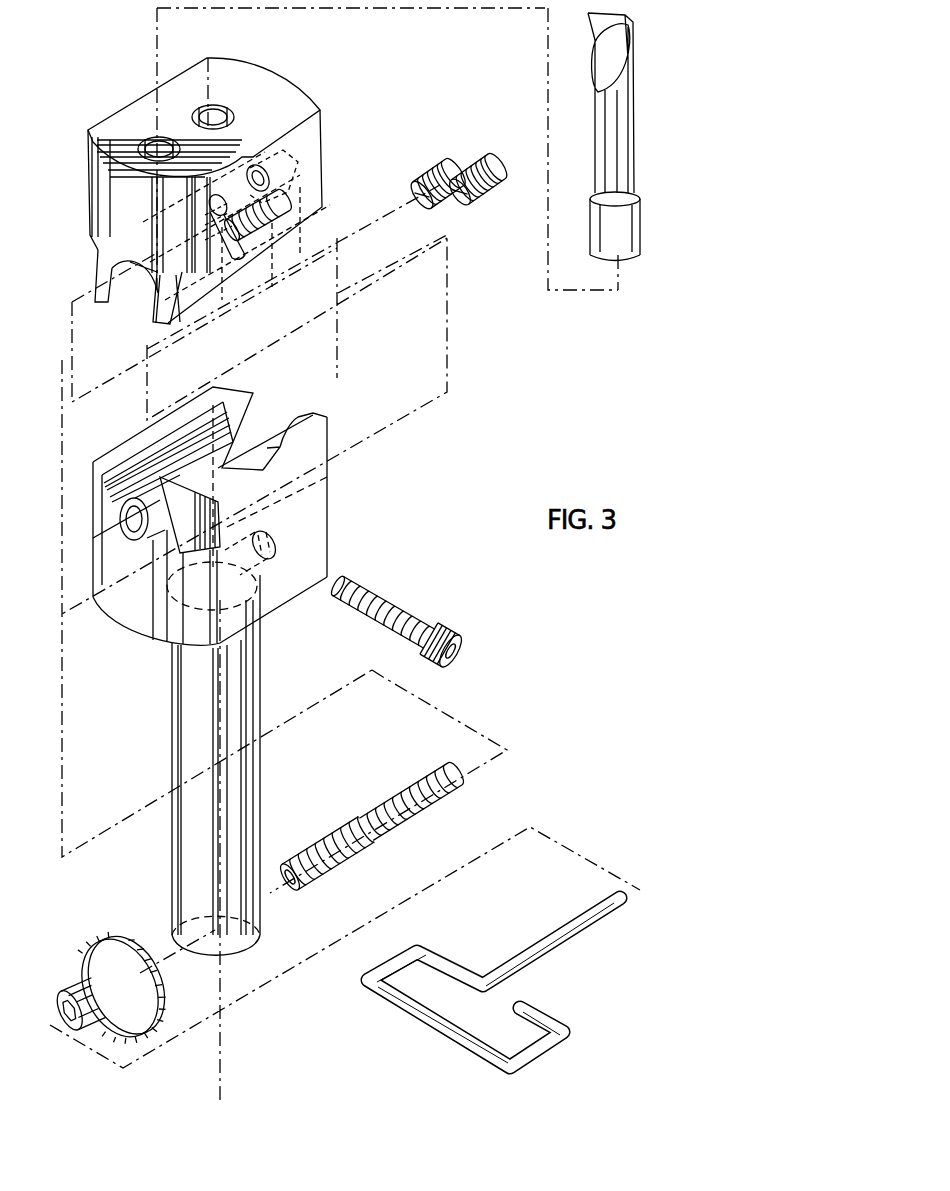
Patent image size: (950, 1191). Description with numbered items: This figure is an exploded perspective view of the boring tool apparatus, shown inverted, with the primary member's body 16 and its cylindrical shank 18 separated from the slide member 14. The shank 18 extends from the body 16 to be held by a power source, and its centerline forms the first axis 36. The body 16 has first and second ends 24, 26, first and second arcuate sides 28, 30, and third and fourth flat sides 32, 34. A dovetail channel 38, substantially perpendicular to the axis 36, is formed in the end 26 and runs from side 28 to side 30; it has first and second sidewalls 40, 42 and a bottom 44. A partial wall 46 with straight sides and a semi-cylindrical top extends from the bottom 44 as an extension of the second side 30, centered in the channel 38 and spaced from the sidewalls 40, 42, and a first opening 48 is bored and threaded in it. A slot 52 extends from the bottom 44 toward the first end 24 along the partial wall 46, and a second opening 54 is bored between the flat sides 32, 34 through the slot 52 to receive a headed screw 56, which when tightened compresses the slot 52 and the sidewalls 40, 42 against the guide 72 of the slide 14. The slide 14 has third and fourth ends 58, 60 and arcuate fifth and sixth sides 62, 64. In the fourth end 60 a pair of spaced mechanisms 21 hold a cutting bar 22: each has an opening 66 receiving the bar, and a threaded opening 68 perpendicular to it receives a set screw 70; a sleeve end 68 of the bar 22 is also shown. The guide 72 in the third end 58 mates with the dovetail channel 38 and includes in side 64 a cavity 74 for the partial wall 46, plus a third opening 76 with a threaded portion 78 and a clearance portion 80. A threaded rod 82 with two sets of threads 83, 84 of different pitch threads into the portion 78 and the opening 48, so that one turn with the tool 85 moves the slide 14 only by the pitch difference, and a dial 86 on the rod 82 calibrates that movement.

The slide member 14 is at (211, 197).
The body 16 is at (210, 507).
The shank 18 is at (251, 781).
The mechanism for holding a cutting bar 21 is at (134, 131).
The cutting bar 22 is at (634, 138).
The first end 24 is at (145, 630).
The second end 26 is at (137, 441).
The first arcuate side 28 is at (330, 485).
The second arcuate side 30 is at (120, 610).
The third flat side 32 is at (93, 470).
The fourth flat side 34 is at (318, 519).
The first axis 36 is at (222, 1031).
The dovetail channel 38 is at (256, 414).
The first sidewall 40 is at (232, 392).
The second sidewall 42 is at (322, 433).
The bottom 44 is at (298, 416).
The partial wall 46 is at (95, 498).
The first opening 48 is at (100, 520).
The slot 52 is at (103, 572).
The second opening 54 is at (270, 534).
The headed screw 56 is at (405, 611).
The third end 58 is at (229, 285).
The fourth end 60 is at (267, 76).
The fifth arcuate side 62 is at (323, 154).
The sixth arcuate side 64 is at (96, 182).
The opening 66 is at (163, 138).
The threaded opening 68 is at (215, 274).
The set screw 70 is at (437, 174).
The guide 72 is at (191, 322).
The cavity 74 is at (128, 299).
The third opening 76 is at (290, 250).
The threaded portion 78 is at (258, 268).
The clearance portion 80 is at (203, 314).
The threaded rod 82 is at (372, 829).
The threads 83 is at (390, 806).
The threads 84 is at (307, 853).
The tool 85 is at (582, 930).
The dial 86 is at (102, 936).